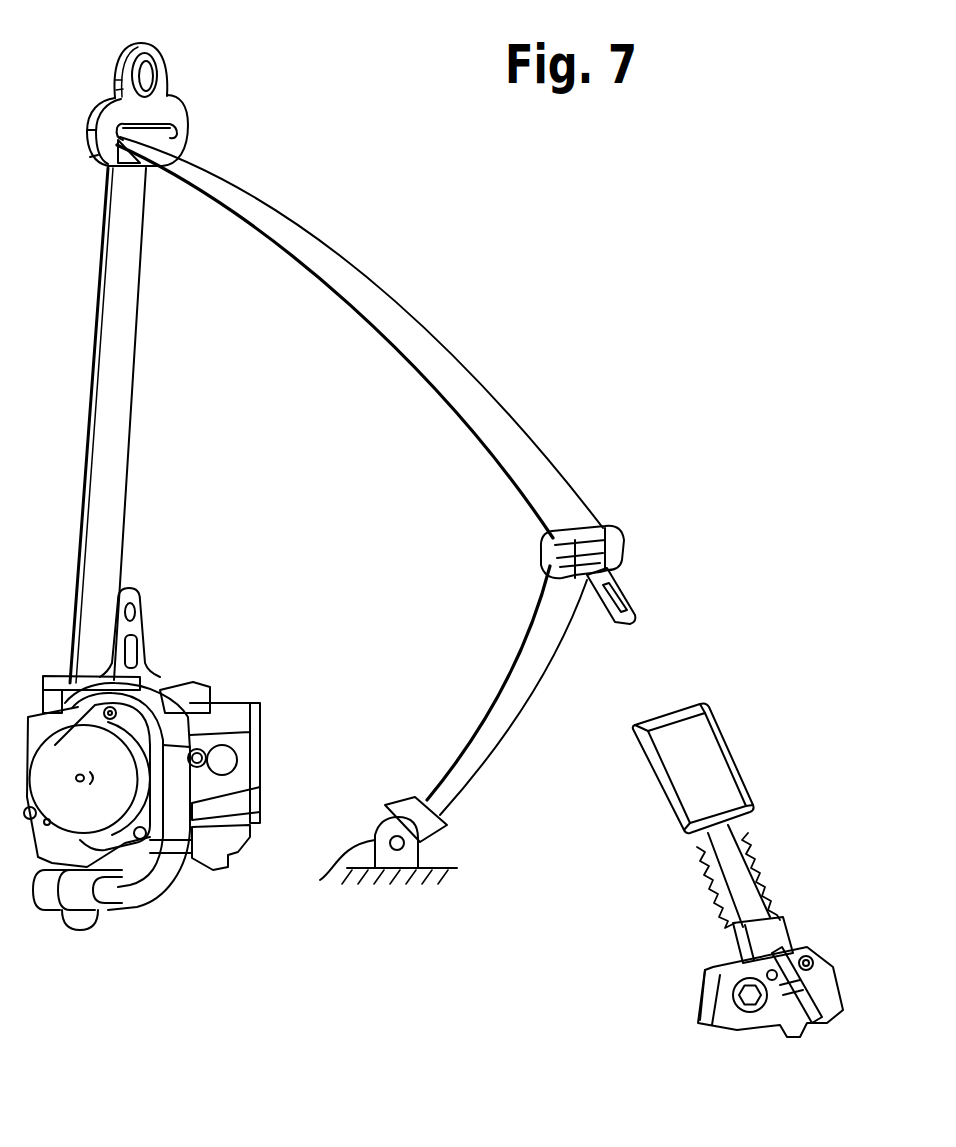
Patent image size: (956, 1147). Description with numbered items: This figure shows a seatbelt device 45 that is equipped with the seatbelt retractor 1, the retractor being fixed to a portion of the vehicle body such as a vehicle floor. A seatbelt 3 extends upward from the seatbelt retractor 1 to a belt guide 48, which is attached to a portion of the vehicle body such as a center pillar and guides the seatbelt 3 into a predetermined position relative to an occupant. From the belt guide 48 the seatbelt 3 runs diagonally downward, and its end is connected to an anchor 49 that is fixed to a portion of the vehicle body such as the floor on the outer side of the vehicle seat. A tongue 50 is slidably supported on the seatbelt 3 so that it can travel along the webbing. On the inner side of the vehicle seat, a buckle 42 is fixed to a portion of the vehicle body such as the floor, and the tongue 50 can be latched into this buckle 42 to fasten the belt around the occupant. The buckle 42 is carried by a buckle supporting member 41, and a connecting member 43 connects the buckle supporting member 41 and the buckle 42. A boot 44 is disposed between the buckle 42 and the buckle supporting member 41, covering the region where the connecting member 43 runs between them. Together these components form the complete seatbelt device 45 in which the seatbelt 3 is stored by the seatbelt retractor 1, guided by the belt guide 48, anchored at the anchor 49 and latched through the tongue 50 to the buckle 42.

The seatbelt device 45 is at (570, 271).
The belt guide 48 is at (180, 110).
The seatbelt 3 is at (111, 468).
The tongue 50 is at (620, 577).
The anchor 49 is at (363, 849).
The seatbelt retractor 1 is at (218, 706).
The buckle 42 is at (712, 780).
The connecting member 43 is at (737, 872).
The boot 44 is at (753, 833).
The buckle supporting member 41 is at (800, 953).